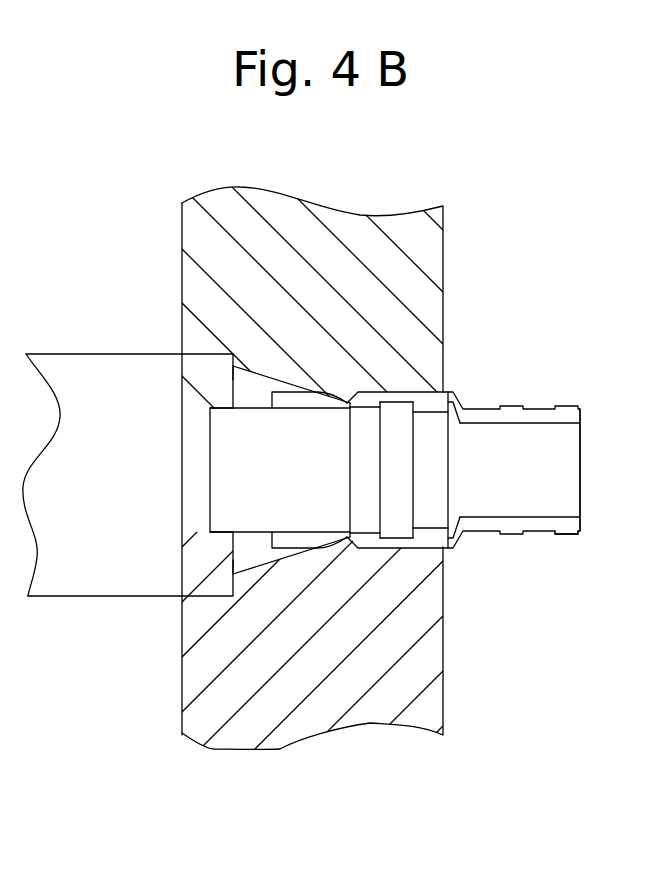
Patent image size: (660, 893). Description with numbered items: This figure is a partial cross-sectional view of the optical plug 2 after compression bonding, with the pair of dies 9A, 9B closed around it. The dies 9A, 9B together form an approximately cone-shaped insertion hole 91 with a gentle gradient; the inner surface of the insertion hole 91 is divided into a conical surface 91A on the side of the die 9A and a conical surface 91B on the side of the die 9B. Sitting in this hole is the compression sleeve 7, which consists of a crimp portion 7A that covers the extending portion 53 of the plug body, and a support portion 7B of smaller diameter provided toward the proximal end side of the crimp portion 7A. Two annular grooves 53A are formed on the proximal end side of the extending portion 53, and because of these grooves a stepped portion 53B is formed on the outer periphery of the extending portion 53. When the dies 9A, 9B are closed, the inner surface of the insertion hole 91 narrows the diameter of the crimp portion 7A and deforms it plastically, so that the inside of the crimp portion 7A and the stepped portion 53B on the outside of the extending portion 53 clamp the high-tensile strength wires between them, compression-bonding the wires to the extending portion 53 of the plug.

The optical plug 2 is at (567, 460).
The compression sleeve 7 is at (566, 394).
The crimp portion 7A is at (296, 540).
The support portion 7B is at (567, 535).
The die 9A is at (421, 253).
The die 9B is at (425, 673).
The extending portion 53 is at (233, 515).
The annular grooves 53A is at (363, 497).
The stepped portion 53B is at (352, 407).
The insertion hole 91 is at (180, 433).
The conical surface 91A is at (273, 372).
The conical surface 91B is at (262, 568).